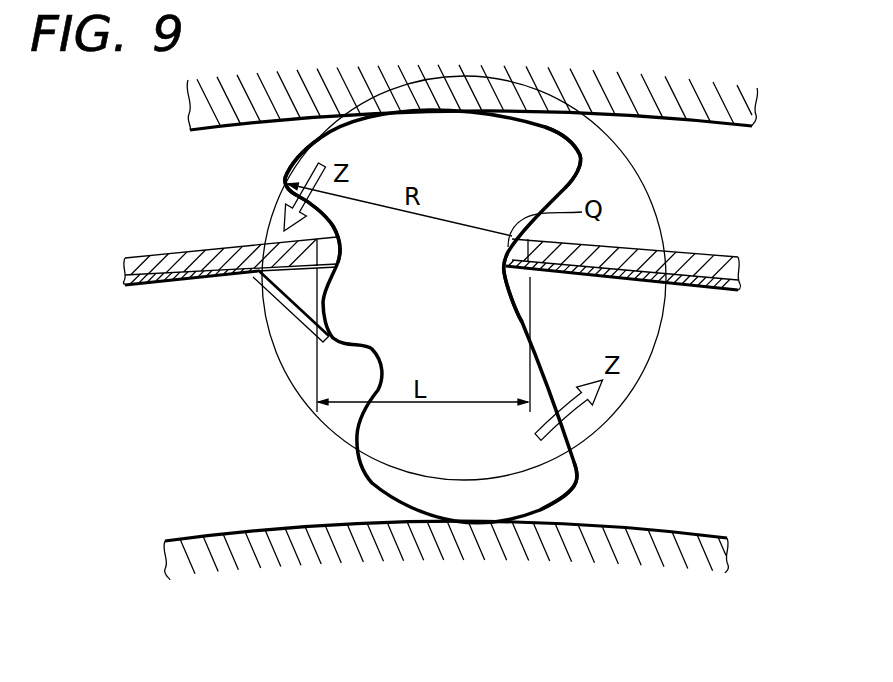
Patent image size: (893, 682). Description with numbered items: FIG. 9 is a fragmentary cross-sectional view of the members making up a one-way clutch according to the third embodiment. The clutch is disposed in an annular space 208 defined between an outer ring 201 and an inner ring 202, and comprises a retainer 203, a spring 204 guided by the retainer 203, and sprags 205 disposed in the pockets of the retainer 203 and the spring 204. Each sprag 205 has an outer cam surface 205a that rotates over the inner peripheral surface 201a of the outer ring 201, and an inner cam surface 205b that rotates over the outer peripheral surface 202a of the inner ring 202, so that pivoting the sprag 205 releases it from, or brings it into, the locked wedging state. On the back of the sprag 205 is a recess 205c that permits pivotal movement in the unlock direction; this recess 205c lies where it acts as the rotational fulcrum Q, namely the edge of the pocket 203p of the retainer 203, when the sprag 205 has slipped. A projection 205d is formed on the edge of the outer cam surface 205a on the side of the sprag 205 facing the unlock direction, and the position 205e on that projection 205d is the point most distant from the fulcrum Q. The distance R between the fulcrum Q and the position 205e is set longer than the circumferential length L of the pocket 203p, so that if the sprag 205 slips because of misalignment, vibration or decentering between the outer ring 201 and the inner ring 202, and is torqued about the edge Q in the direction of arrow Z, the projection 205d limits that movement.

The outer ring 201 is at (472, 74).
The inner peripheral surface of the outer ring 201a is at (690, 120).
The inner ring 202 is at (446, 550).
The outer peripheral surface of the inner ring 202a is at (234, 536).
The retainer 203 is at (439, 293).
The pocket of the retainer 203p is at (320, 296).
The spring 204 is at (697, 282).
The sprag 205 is at (402, 273).
The outer cam surface 205a is at (565, 133).
The inner cam surface 205b is at (563, 497).
The recess 205c is at (513, 270).
The projection 205d is at (298, 168).
The position on the projection 205e is at (285, 181).
The annular space 208 is at (672, 179).